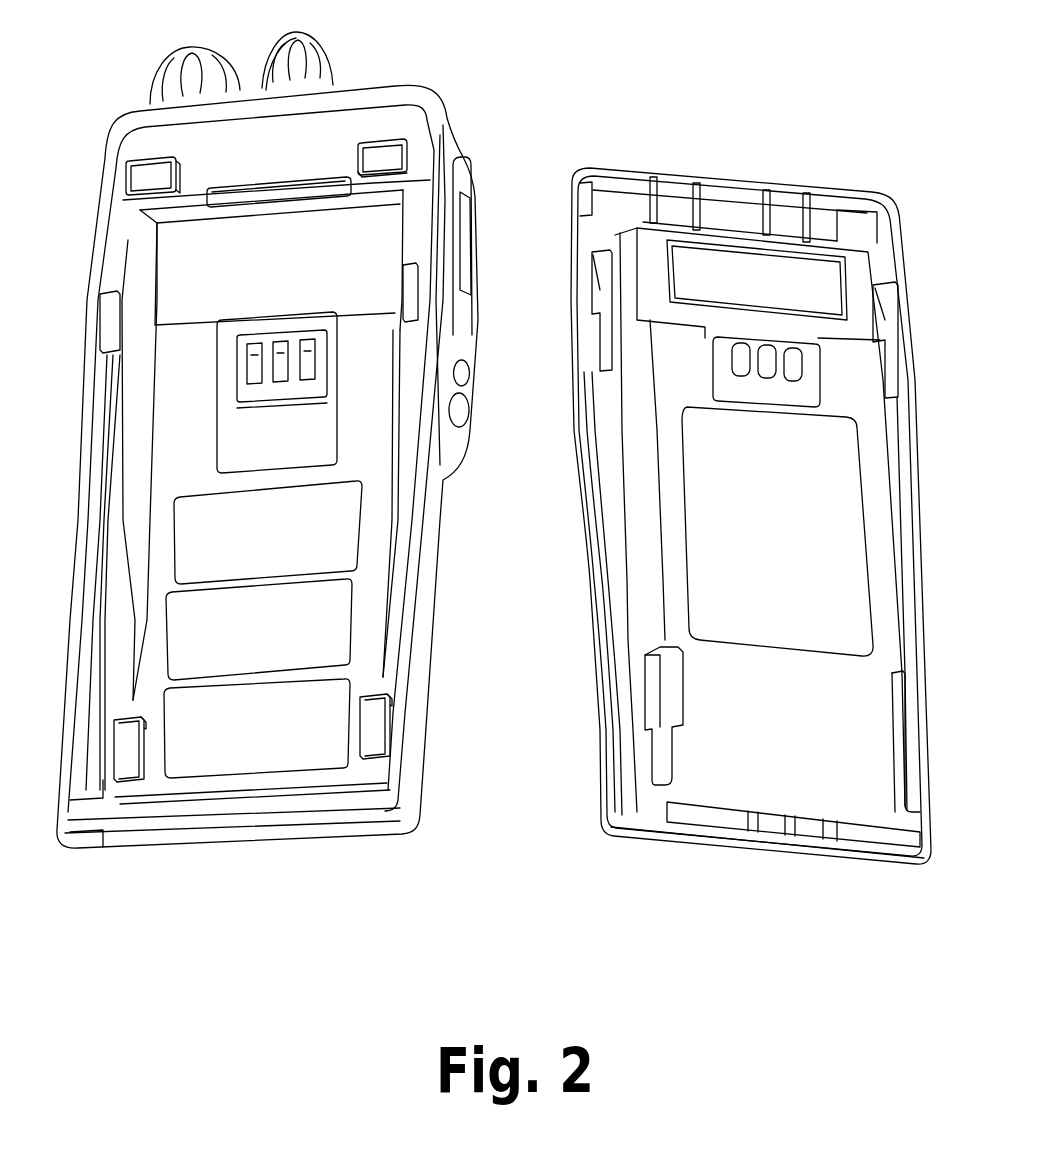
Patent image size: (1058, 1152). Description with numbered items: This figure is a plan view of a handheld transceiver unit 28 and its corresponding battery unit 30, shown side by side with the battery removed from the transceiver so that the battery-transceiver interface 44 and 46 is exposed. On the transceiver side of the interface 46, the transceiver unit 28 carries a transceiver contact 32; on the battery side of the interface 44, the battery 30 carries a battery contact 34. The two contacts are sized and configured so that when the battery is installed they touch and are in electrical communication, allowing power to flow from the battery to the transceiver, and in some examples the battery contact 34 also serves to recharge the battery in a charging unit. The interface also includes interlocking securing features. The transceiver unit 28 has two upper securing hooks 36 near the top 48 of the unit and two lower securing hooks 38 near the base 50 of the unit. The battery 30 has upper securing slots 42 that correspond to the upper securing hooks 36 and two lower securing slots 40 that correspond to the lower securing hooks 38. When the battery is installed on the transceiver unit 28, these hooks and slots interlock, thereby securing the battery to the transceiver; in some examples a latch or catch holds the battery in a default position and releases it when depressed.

The handheld transceiver unit 28 is at (431, 97).
The battery unit 30 is at (740, 190).
The transceiver contact 32 is at (250, 362).
The battery contact 34 is at (793, 356).
The upper securing hooks 36 is at (148, 176).
The lower securing hooks 38 is at (127, 768).
The lower securing slots 40 is at (657, 680).
The upper securing slots 42 is at (593, 265).
The battery-transceiver interface (battery side) 44 is at (822, 530).
The battery-transceiver interface (transceiver side) 46 is at (350, 530).
The top of the transceiver unit 48 is at (137, 117).
The base of the transceiver unit 50 is at (227, 845).